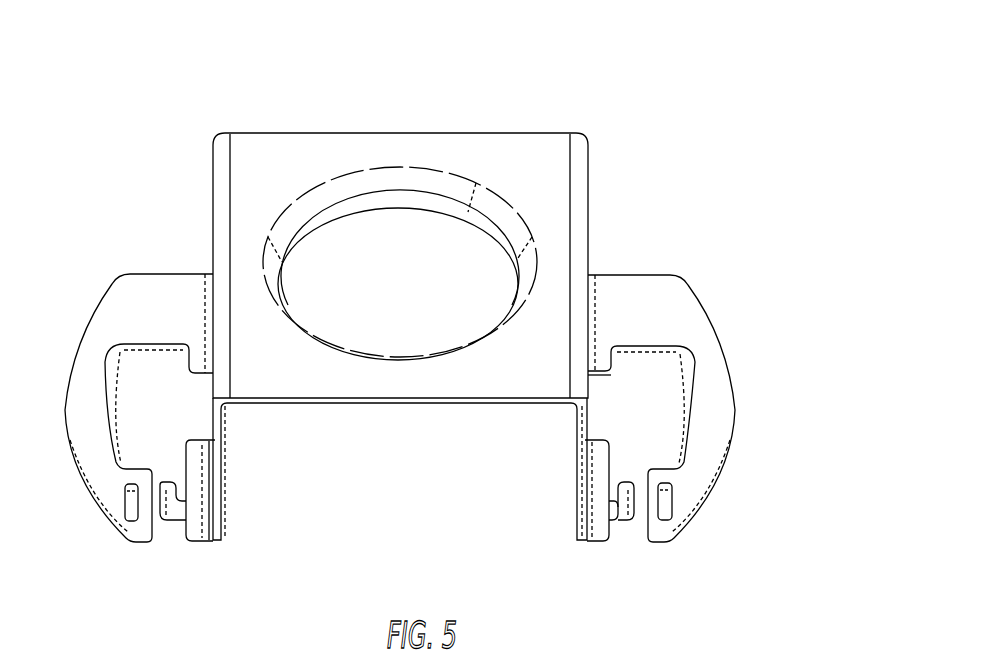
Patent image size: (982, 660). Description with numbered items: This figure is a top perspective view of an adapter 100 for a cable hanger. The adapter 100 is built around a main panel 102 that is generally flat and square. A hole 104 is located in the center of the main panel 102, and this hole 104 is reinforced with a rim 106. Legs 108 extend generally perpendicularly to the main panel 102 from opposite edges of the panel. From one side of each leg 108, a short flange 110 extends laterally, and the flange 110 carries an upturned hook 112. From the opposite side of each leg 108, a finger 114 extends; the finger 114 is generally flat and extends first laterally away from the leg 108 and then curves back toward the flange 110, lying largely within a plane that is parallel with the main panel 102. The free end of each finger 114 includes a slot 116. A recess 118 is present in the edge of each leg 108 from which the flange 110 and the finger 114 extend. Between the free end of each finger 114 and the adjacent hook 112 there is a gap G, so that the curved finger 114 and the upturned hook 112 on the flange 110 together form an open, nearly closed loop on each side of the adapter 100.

The adapter 100 is at (747, 188).
The main panel 102 is at (302, 148).
The hole 104 is at (503, 217).
The rim 106 is at (412, 197).
The legs 108 is at (222, 463).
The short flange 110 is at (618, 508).
The upturned hook 112 is at (630, 518).
The finger 114 is at (713, 363).
The slot 116 is at (665, 518).
The recess 118 is at (598, 397).
The gap G is at (634, 479).